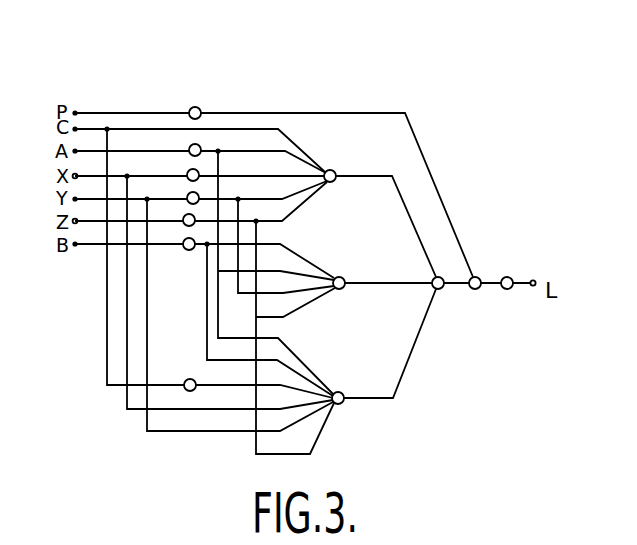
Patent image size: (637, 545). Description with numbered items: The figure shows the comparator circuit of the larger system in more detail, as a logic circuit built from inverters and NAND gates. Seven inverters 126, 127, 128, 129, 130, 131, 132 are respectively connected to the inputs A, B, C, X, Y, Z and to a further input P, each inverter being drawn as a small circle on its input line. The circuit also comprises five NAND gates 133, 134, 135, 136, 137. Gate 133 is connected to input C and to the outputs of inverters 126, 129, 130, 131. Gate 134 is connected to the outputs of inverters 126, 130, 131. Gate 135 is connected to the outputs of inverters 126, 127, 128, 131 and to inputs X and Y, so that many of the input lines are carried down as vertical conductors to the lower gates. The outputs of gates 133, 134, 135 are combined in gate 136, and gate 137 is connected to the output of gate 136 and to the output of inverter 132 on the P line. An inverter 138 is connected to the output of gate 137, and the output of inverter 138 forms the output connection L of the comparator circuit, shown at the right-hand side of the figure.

The inverter 126 is at (190, 146).
The inverter 127 is at (188, 250).
The inverter 128 is at (189, 379).
The inverter 129 is at (188, 171).
The inverter 130 is at (188, 194).
The inverter 131 is at (185, 216).
The inverter 132 is at (199, 108).
The NAND gate 133 is at (335, 170).
The NAND gate 134 is at (342, 277).
The NAND gate 135 is at (342, 392).
The NAND gate 136 is at (438, 289).
The NAND gate 137 is at (480, 289).
The inverter 138 is at (509, 277).